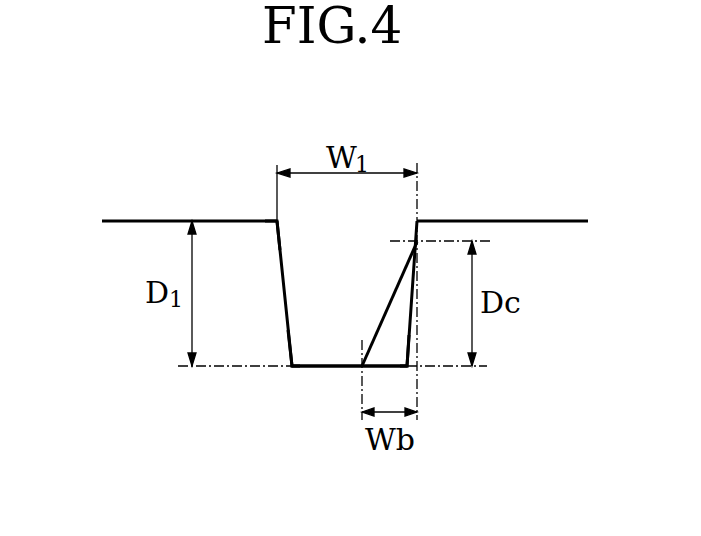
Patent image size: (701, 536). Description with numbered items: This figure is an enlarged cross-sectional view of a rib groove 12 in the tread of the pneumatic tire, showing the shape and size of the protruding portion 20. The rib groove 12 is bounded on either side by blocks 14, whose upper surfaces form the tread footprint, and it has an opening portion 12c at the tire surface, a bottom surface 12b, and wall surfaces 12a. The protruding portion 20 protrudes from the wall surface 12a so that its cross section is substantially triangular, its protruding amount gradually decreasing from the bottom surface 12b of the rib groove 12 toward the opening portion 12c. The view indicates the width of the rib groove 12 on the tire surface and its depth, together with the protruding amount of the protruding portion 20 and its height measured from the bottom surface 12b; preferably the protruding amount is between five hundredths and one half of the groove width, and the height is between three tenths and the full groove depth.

The block 14 is at (138, 220).
The rib groove 12 is at (325, 290).
The wall surface 12a is at (417, 229).
The bottom surface 12b is at (335, 366).
The opening portion 12c is at (307, 215).
The protruding portion 20 is at (383, 310).